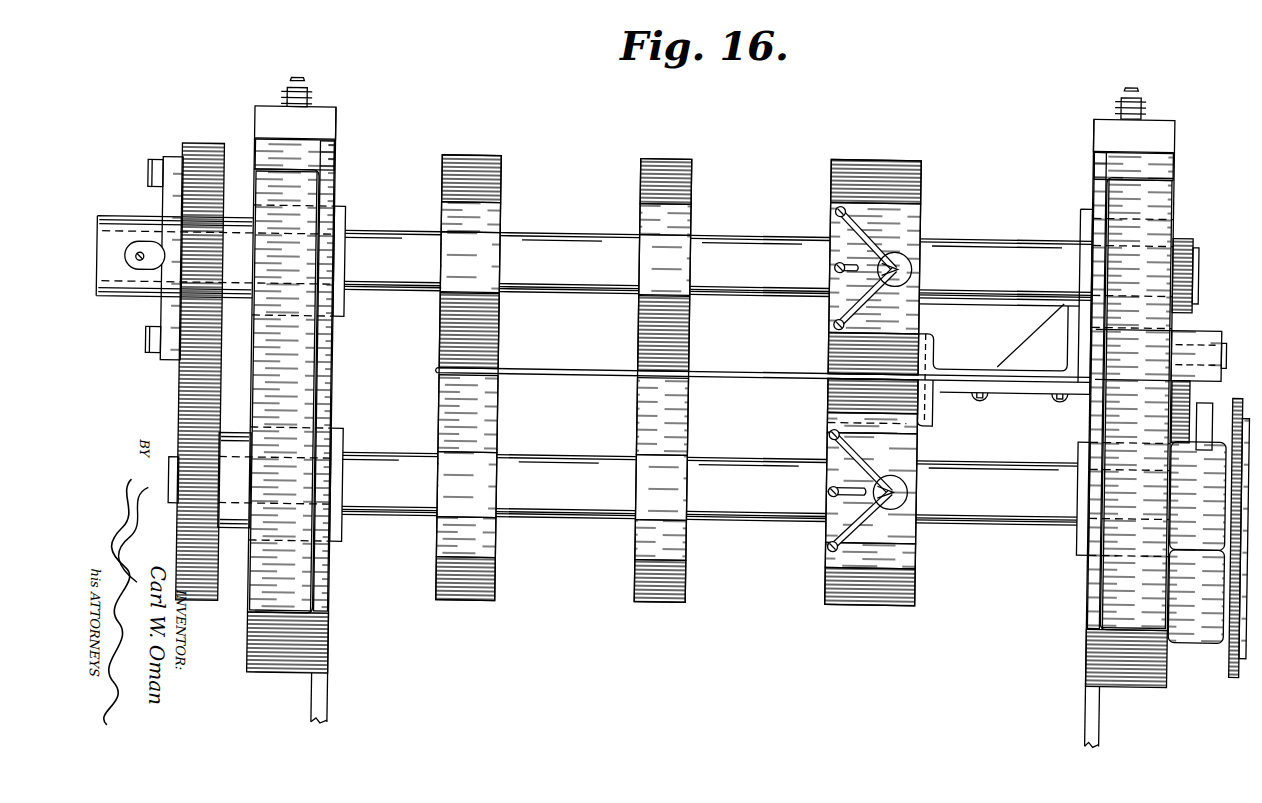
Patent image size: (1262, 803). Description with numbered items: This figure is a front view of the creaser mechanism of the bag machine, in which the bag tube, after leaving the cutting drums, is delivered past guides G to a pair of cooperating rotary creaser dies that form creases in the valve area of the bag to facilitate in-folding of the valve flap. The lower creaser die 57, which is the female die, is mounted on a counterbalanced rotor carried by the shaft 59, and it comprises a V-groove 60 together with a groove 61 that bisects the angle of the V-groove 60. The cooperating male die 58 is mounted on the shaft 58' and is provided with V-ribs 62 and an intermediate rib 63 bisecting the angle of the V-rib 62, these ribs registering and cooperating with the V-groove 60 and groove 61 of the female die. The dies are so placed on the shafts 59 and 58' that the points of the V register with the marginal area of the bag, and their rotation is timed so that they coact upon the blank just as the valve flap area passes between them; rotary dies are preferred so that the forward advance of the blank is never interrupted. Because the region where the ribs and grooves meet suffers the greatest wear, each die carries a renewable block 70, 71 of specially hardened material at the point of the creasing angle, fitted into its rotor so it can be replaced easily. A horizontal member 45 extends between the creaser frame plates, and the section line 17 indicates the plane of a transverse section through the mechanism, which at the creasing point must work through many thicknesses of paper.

The section line of Fig. 17 is at (760, 441).
The bar 45 is at (606, 371).
The lower creaser die 57 is at (917, 587).
The male creaser die 58 is at (908, 268).
The shaft 58' is at (647, 257).
The shaft 59 is at (565, 521).
The V-groove 60 is at (870, 462).
The groove 61 is at (832, 487).
The V-ribs 62 is at (877, 237).
The intermediate rib 63 is at (832, 264).
The renewable block 70 is at (906, 490).
The renewable block 71 is at (908, 267).
The guides G is at (922, 384).